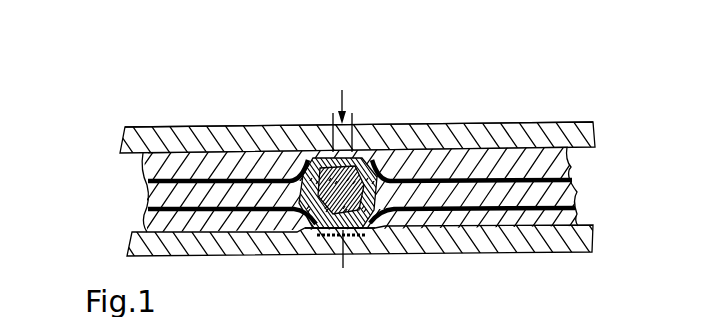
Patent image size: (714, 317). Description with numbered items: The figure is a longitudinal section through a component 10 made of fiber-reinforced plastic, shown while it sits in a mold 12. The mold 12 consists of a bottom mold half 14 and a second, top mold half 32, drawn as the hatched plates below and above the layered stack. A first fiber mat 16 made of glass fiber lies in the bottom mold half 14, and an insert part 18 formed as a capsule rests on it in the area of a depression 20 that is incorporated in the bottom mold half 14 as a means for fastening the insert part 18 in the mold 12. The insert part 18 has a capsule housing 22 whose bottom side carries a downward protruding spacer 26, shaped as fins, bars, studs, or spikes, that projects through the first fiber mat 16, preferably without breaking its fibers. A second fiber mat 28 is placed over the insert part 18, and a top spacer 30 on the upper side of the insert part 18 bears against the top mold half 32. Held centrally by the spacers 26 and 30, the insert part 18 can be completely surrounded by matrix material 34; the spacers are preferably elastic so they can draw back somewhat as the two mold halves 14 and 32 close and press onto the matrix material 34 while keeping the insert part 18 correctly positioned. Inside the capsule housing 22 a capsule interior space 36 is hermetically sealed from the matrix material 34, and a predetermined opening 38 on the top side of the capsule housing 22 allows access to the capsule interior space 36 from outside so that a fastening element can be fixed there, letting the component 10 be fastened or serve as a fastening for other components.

The component 10 is at (105, 191).
The mold 12 is at (205, 115).
The bottom mold half 14 is at (567, 253).
The first fiber mat 16 is at (578, 217).
The insert part 18 is at (297, 153).
The depression 20 is at (333, 230).
The capsule housing 22 is at (403, 158).
The spacer 26 is at (365, 230).
The second fiber mat 28 is at (570, 160).
The top spacer 30 is at (360, 158).
The top mold half 32 is at (568, 123).
The matrix material 34 is at (575, 182).
The capsule interior space 36 is at (325, 152).
The predetermined opening 38 is at (352, 155).